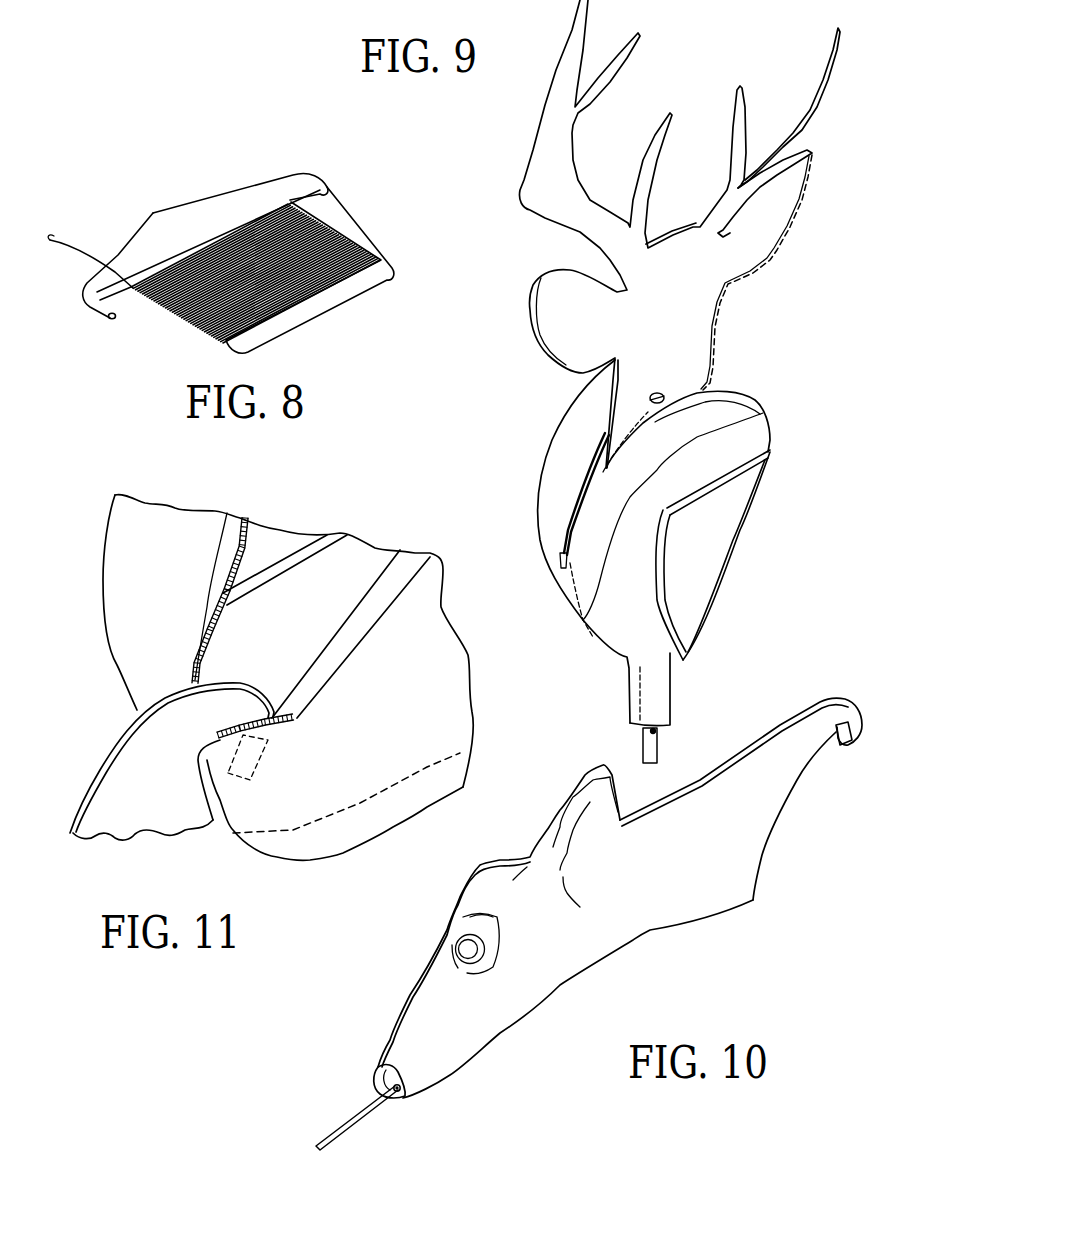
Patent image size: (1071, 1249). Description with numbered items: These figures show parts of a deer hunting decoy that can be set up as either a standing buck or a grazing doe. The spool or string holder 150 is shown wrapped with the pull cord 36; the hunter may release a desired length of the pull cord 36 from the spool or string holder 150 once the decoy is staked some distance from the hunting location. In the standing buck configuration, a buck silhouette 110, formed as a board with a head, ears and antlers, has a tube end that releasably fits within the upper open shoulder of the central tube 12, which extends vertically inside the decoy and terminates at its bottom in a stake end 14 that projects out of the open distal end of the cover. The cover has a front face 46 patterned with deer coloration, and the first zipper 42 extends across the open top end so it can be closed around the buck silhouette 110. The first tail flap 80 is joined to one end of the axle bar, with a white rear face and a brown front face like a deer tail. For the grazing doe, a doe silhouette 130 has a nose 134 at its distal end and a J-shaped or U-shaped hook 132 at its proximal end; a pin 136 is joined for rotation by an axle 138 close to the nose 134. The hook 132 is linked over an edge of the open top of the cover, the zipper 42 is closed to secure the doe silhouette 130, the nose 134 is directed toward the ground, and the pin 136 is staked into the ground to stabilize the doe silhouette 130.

In FIG. 9, the central tube 12 is at (663, 413).
In FIG. 9, the stake end 14 is at (660, 747).
In FIG. 8, the pull cord 36 is at (75, 246).
In FIG. 9, the first zipper 42 is at (567, 473).
In FIG. 9, the front face 46 is at (613, 613).
In FIG. 9, the first tail flap 80 is at (727, 537).
In FIG. 9, the buck silhouette 110 is at (777, 292).
In FIG. 10, the doe silhouette 130 is at (650, 943).
In FIG. 11, the doe silhouette 130 is at (127, 782).
In FIG. 10, the hook 132 is at (860, 697).
In FIG. 11, the hook 132 is at (160, 680).
In FIG. 10, the nose 134 is at (378, 1063).
In FIG. 10, the pin 136 is at (326, 1138).
In FIG. 10, the axle 138 is at (400, 1096).
In FIG. 8, the spool or string holder 150 is at (215, 173).